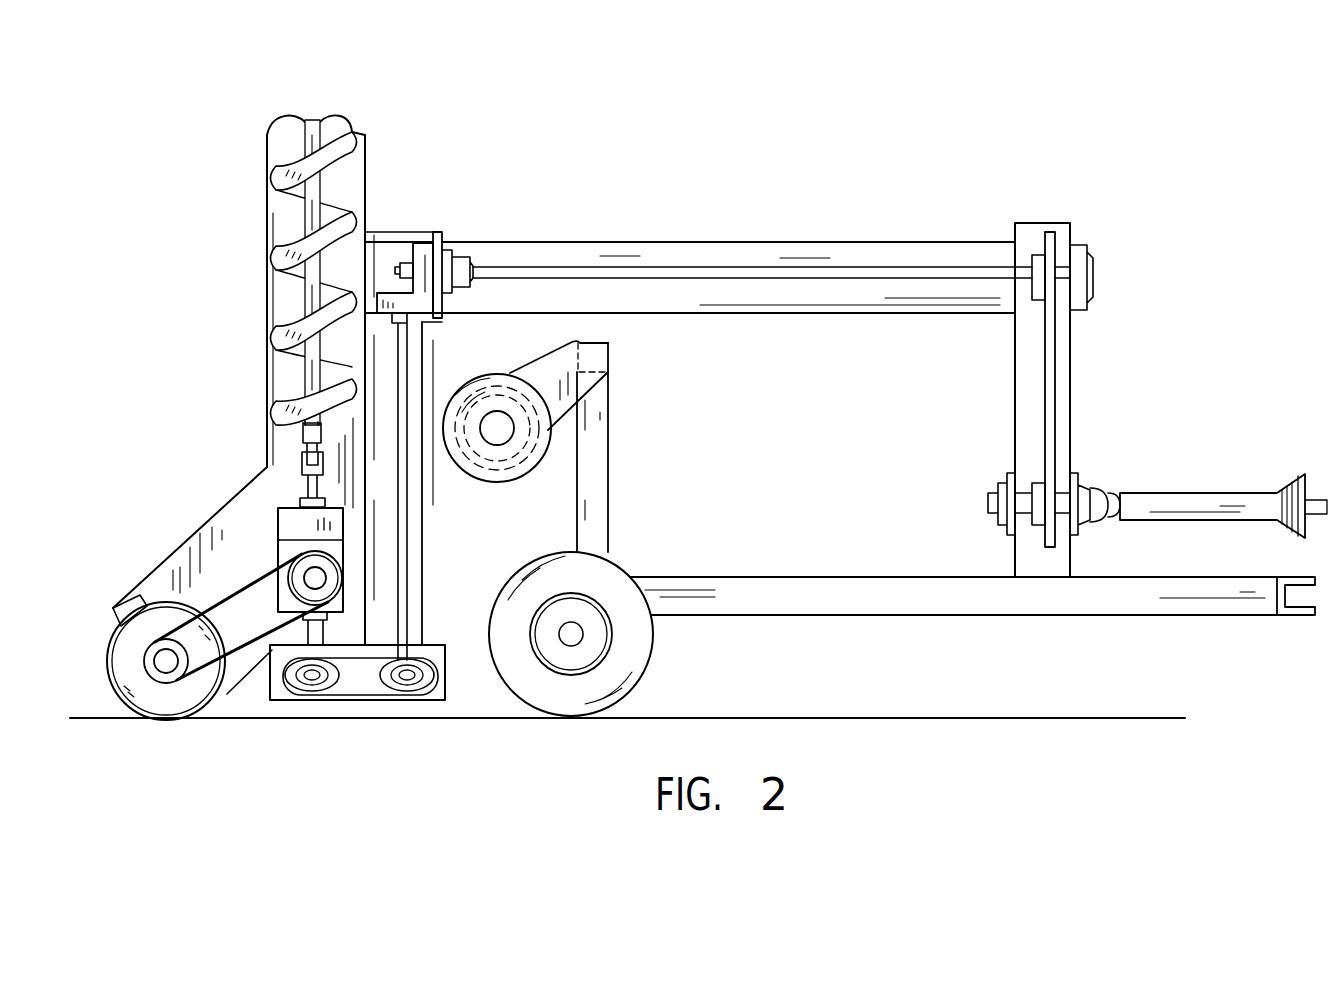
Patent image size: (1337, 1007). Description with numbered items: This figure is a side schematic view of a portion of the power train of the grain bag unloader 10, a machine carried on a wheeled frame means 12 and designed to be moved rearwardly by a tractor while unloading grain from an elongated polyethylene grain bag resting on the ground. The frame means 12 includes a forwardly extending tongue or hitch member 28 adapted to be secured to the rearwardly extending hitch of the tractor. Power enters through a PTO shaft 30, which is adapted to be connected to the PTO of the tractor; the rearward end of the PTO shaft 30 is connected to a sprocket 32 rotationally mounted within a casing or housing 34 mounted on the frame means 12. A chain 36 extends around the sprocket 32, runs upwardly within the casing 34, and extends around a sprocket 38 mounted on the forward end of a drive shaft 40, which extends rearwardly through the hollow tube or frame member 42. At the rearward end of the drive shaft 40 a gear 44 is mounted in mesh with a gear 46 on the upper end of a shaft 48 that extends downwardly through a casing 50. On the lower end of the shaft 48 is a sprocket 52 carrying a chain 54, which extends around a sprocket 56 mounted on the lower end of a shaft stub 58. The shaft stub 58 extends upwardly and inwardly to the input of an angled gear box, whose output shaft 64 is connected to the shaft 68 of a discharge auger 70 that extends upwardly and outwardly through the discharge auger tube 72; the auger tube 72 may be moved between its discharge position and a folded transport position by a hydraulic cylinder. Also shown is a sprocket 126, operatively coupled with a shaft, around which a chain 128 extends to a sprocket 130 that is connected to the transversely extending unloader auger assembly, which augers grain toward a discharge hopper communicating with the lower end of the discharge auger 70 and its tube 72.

The grain bag unloader 10 is at (724, 195).
The wheeled frame means 12 is at (710, 545).
The tongue or hitch member 28 is at (1285, 622).
The PTO shaft 30 is at (1180, 505).
The sprocket 32 is at (1037, 487).
The casing or housing 34 is at (1072, 350).
The chain 36 is at (1056, 382).
The sprocket 38 is at (1057, 232).
The drive shaft 40 is at (840, 267).
The hollow tube or frame member 42 is at (543, 242).
The gear 44 is at (415, 245).
The gear 46 is at (393, 303).
The shaft 48 is at (403, 363).
The casing 50 is at (425, 503).
The sprocket 52 is at (418, 667).
The chain 54 is at (360, 697).
The sprocket 56 is at (293, 687).
The shaft stub 58 is at (310, 648).
The output shaft 64 is at (307, 487).
The shaft 68 is at (300, 418).
The discharge auger 70 is at (268, 320).
The discharge auger tube 72 is at (265, 183).
The sprocket 126 is at (287, 565).
The chain 128 is at (227, 593).
The sprocket 130 is at (155, 653).